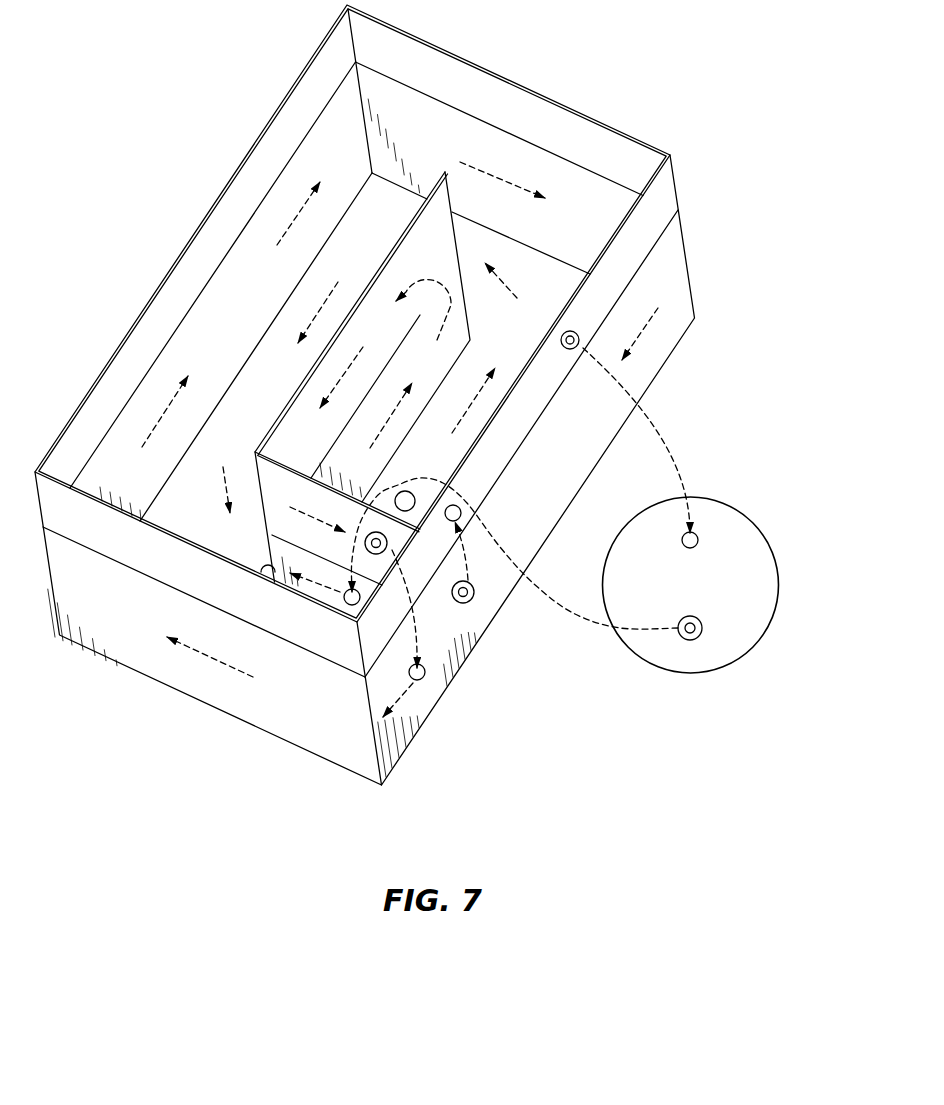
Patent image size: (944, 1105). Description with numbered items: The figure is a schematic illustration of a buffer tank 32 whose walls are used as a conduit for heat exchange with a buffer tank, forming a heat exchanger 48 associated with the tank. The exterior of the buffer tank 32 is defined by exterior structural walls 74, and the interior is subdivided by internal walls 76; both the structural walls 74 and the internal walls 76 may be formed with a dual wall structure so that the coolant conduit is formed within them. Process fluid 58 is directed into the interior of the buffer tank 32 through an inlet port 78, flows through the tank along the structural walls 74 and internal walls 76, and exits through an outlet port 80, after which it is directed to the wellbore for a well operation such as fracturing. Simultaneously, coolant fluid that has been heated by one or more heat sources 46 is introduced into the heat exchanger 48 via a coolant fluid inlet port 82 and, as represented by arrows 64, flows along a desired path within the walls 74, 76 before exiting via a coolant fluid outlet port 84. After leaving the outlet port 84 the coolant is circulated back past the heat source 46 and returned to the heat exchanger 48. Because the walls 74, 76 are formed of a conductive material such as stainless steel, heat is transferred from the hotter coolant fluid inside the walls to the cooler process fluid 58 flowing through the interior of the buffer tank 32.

The buffer tank 32 is at (548, 86).
The heat source 46 is at (703, 501).
The heat exchanger 48 is at (160, 657).
The process fluid 58 is at (318, 314).
The coolant fluid flow arrows 64 is at (425, 272).
The exterior structural walls 74 is at (672, 263).
The internal walls 76 is at (430, 240).
The inlet port 78 is at (406, 490).
The outlet port 80 is at (265, 565).
The coolant fluid inlet port 82 is at (349, 606).
The coolant fluid outlet port 84 is at (571, 349).